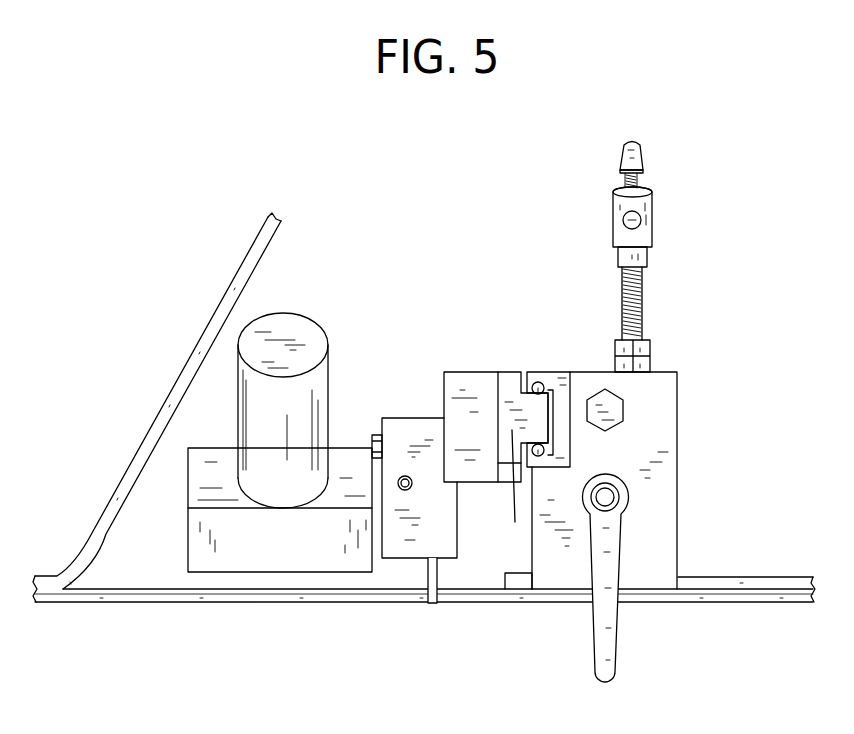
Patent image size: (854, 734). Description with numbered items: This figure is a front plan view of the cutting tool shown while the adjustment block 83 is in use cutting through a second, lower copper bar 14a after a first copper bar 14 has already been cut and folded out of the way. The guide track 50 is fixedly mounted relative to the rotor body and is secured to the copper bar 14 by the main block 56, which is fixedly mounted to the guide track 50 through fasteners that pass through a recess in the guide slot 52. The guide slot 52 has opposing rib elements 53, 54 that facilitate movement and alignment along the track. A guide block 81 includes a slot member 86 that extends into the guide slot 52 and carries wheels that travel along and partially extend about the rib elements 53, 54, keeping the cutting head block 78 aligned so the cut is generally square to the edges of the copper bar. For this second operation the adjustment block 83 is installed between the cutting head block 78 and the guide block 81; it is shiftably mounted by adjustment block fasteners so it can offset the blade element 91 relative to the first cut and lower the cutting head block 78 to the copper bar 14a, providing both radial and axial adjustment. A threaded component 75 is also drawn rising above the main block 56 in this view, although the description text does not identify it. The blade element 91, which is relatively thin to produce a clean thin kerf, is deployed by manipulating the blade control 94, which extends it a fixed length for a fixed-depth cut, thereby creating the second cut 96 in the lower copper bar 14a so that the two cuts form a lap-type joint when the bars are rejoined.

The copper bar 14 is at (219, 317).
The copper bar 14a is at (720, 597).
The blade control 94 is at (238, 416).
The cutting head block 78 is at (407, 424).
The adjustment block 83 is at (460, 371).
The guide slot 52 is at (553, 418).
The rib element 53 is at (537, 382).
The guide track 50 is at (558, 369).
The rib element 54 is at (540, 458).
The main block 56 is at (680, 503).
The slot member 86 is at (545, 428).
The adjustment screw assembly 75 is at (653, 262).
The guide block 81 is at (517, 509).
The second cut 96 is at (425, 600).
The blade element 91 is at (438, 572).